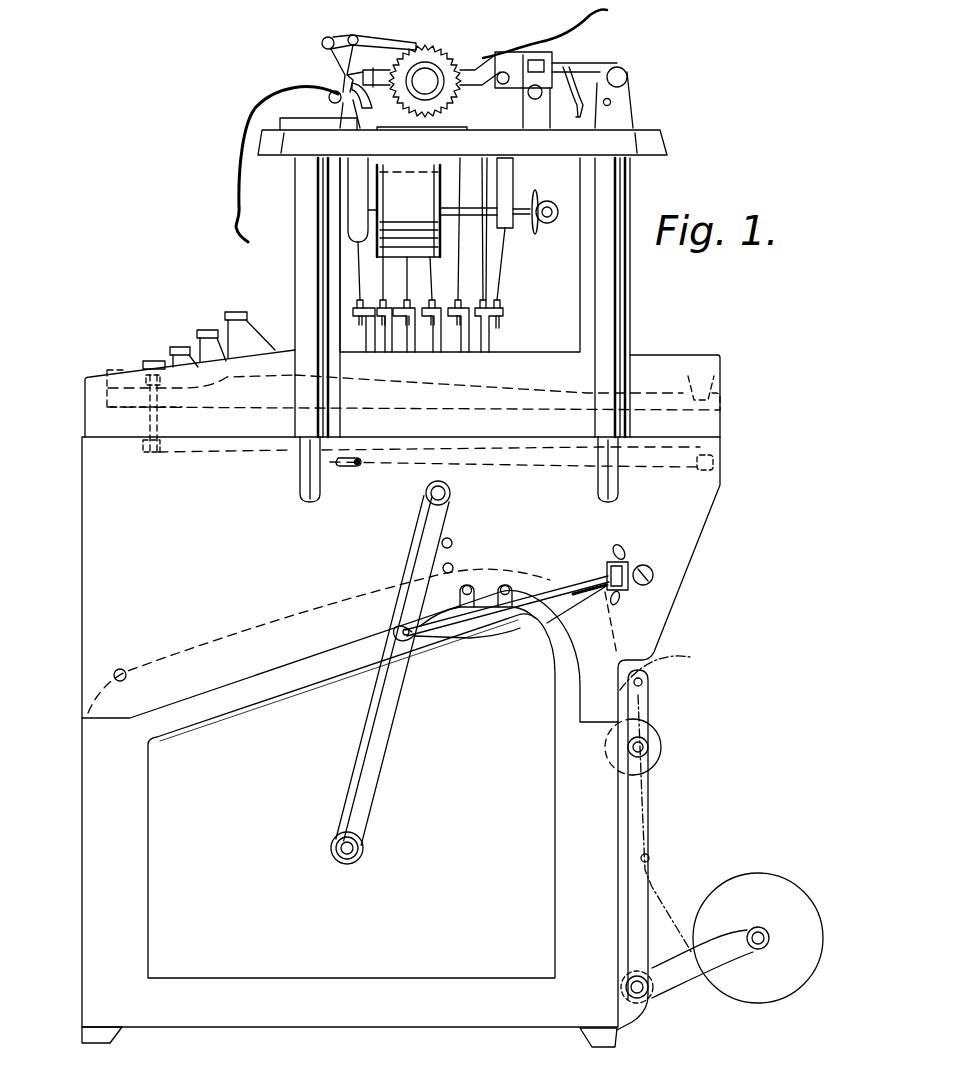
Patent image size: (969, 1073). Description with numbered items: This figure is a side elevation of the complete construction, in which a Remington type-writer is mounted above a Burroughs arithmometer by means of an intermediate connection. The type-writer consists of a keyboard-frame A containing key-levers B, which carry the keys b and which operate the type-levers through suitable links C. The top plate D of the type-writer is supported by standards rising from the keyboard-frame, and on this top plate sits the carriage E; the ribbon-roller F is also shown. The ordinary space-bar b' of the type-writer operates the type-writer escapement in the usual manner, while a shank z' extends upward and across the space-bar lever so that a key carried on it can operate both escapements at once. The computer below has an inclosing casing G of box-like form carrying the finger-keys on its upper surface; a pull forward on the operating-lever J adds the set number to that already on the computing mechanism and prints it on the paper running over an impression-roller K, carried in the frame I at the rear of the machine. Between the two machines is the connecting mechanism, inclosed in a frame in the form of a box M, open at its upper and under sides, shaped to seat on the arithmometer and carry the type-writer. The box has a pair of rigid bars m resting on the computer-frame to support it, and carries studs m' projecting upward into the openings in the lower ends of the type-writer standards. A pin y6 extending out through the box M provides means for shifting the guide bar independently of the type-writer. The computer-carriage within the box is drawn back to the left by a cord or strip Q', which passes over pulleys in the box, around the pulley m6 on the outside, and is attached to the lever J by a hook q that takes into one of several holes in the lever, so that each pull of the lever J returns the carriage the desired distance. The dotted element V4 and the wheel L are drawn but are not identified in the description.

The box M is at (401, 742).
The inclosing casing G is at (350, 784).
The key-levers B is at (402, 372).
The keys b is at (209, 340).
The space-bar b' is at (144, 372).
The shank z' is at (164, 392).
The keyboard-frame A is at (460, 271).
The top plate D is at (633, 140).
The studs m' is at (452, 330).
The carriage E is at (445, 42).
The ribbon-roller F is at (453, 207).
The links C is at (500, 310).
The pin y6 is at (360, 470).
The shaft (dotted) V4 is at (500, 470).
The rigid bars m is at (319, 625).
The operating-lever J is at (398, 712).
The hook q is at (420, 642).
The cord or strip Q' is at (507, 591).
The pulley m6 is at (620, 606).
The impression-roller K is at (658, 739).
The frame I is at (640, 817).
The crank wheel L is at (737, 938).